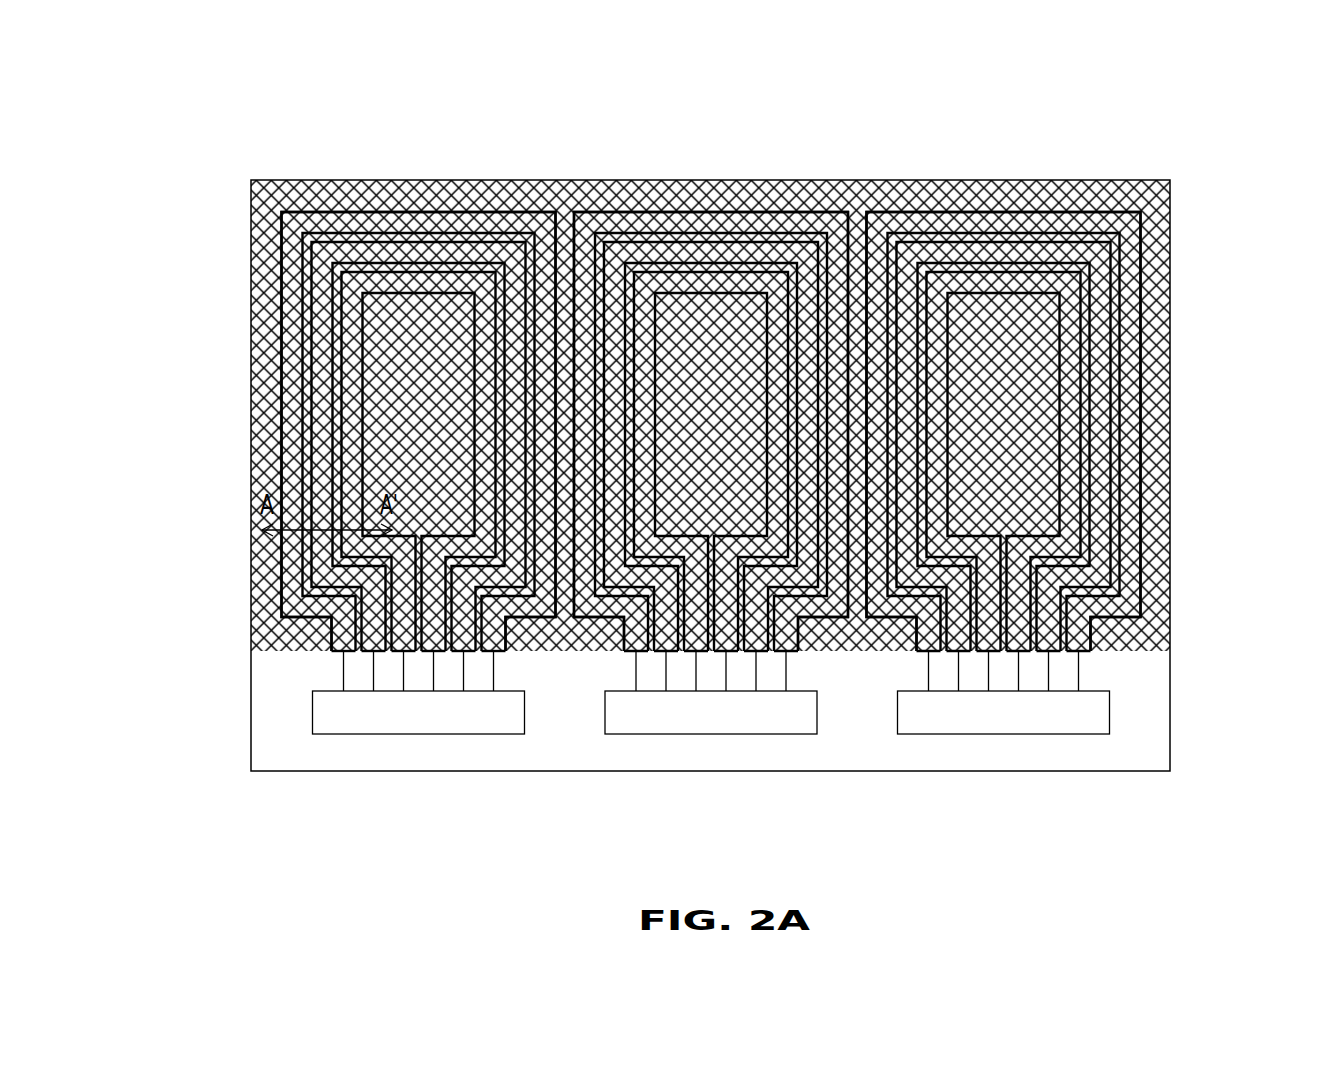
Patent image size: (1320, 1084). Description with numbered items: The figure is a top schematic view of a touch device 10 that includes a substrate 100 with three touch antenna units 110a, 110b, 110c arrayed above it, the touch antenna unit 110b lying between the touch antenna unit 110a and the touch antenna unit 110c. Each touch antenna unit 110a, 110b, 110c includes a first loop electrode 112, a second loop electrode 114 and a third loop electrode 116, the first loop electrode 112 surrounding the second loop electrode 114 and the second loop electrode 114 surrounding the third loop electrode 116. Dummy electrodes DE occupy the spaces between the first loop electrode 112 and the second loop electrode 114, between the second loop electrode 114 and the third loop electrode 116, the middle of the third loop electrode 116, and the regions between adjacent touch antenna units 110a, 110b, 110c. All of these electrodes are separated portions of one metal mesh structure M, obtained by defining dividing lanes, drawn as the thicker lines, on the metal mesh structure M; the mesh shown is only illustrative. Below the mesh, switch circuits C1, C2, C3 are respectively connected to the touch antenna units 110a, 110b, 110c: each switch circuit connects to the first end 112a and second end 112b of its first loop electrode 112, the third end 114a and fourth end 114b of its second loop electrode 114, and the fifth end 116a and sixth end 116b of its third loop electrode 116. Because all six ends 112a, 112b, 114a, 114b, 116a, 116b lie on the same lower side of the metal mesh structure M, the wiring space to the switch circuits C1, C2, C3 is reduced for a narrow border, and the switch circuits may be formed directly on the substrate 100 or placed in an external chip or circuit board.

The touch device 10 is at (1223, 153).
The metal mesh structure M is at (243, 224).
The substrate 100 is at (243, 670).
The dummy electrode DE is at (243, 622).
The touch antenna unit 110a is at (163, 355).
The touch antenna unit 110b is at (770, 122).
The touch antenna unit 110c is at (1242, 377).
The first loop electrode 112 is at (272, 358).
The second loop electrode 114 is at (313, 413).
The third loop electrode 116 is at (337, 457).
The first end 112a is at (491, 648).
The second end 112b is at (329, 648).
The third end 114a is at (460, 648).
The fourth end 114b is at (360, 648).
The fifth end 116a is at (432, 648).
The sixth end 116b is at (399, 648).
The switch circuit C1 is at (367, 712).
The switch circuit C2 is at (700, 708).
The switch circuit C3 is at (993, 706).